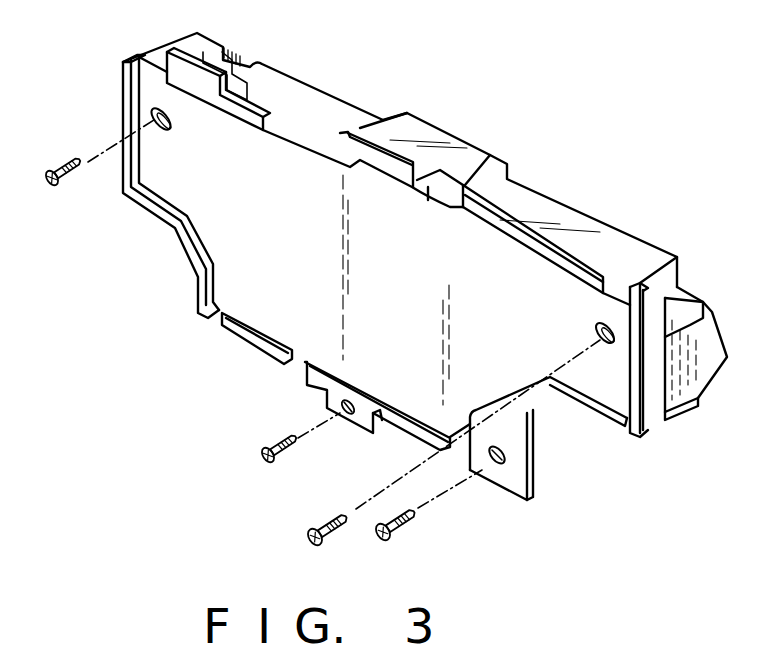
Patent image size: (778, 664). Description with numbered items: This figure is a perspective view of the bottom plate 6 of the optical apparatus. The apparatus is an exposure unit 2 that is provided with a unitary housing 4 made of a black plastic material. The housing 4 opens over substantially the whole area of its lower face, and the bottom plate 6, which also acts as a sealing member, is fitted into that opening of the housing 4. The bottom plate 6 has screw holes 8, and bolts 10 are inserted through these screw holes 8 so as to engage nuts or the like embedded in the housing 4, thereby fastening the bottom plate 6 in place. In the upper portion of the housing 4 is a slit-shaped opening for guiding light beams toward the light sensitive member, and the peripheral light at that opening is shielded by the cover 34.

The exposure unit 2 is at (178, 320).
The housing 4 is at (625, 238).
The bottom plate 6 is at (282, 323).
The screw holes 8 is at (157, 112).
The bolts 10 is at (50, 171).
The cover 34 is at (713, 380).